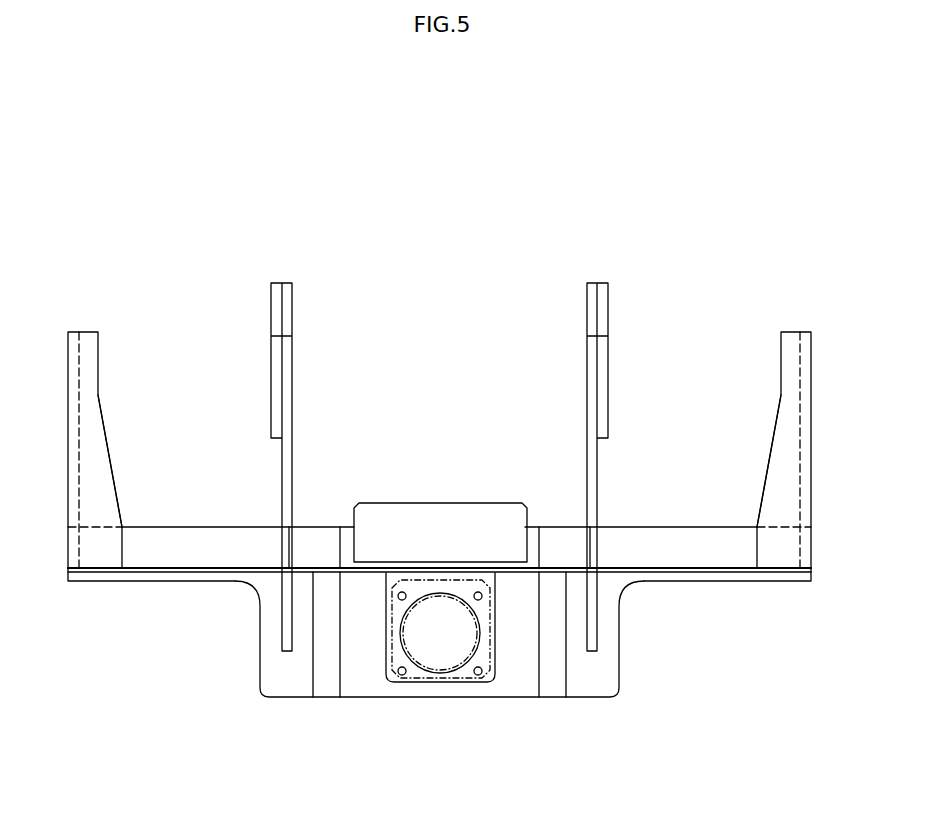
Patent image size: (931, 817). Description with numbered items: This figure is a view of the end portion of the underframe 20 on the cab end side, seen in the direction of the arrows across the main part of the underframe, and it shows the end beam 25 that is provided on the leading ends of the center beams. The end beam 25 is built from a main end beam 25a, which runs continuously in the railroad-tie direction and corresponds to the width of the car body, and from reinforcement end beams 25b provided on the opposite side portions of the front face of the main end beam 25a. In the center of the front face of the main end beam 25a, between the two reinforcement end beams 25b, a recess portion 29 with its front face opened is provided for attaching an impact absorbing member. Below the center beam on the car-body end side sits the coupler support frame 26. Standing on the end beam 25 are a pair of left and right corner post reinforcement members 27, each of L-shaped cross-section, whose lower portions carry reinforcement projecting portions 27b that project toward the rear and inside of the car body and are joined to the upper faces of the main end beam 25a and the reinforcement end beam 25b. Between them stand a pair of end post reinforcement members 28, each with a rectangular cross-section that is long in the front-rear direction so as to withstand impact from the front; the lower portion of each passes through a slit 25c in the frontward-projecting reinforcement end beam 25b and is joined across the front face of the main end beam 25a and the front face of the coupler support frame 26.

The underframe 20 is at (425, 213).
The end beam 25 is at (685, 519).
The main end beam 25a is at (180, 575).
The reinforcement end beam 25b is at (192, 535).
The slit 25c is at (288, 549).
The coupler support frame 26 is at (510, 688).
The corner post reinforcement member 27 is at (118, 402).
The reinforcement projecting portion 27b is at (106, 472).
The end post reinforcement member 28 is at (262, 304).
The recess portion 29 is at (526, 542).